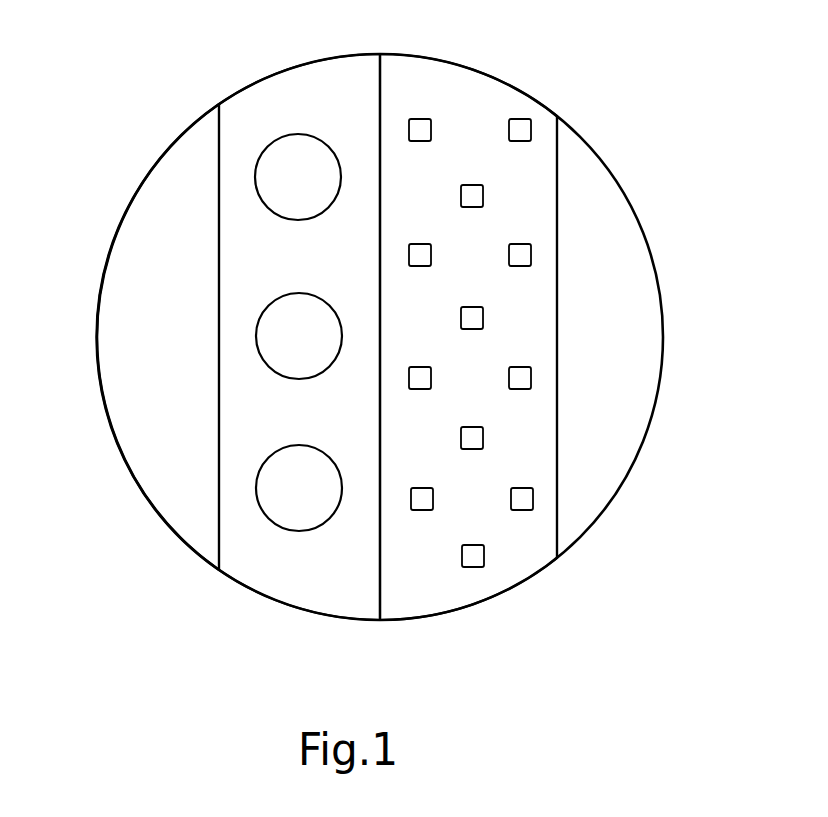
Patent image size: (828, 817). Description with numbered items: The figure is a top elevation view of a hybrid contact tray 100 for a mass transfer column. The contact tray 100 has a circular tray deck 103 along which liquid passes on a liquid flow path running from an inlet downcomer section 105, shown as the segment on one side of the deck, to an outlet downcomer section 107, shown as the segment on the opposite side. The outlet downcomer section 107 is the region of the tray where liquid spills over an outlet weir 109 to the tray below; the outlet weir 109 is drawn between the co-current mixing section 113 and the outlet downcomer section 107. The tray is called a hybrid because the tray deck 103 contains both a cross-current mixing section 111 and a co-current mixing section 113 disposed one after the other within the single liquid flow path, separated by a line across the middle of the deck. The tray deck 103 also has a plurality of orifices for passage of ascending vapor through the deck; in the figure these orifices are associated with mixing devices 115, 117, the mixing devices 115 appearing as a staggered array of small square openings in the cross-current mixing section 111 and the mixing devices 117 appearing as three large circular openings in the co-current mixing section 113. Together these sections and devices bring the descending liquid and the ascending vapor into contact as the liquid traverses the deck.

The contact tray 100 is at (627, 82).
The tray deck 103 is at (237, 582).
The inlet downcomer section 105 is at (612, 212).
The outlet downcomer section 107 is at (160, 180).
The outlet weir 109 is at (219, 130).
The cross-current mixing section 111 is at (418, 78).
The co-current mixing section 113 is at (320, 82).
The mixing devices 115 is at (523, 512).
The mixing devices 117 is at (269, 207).